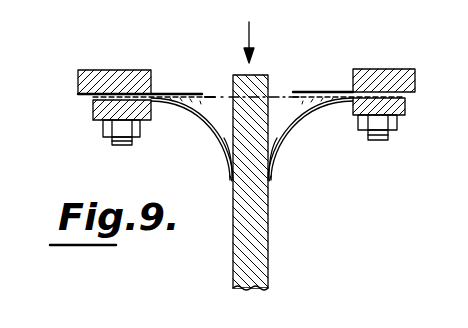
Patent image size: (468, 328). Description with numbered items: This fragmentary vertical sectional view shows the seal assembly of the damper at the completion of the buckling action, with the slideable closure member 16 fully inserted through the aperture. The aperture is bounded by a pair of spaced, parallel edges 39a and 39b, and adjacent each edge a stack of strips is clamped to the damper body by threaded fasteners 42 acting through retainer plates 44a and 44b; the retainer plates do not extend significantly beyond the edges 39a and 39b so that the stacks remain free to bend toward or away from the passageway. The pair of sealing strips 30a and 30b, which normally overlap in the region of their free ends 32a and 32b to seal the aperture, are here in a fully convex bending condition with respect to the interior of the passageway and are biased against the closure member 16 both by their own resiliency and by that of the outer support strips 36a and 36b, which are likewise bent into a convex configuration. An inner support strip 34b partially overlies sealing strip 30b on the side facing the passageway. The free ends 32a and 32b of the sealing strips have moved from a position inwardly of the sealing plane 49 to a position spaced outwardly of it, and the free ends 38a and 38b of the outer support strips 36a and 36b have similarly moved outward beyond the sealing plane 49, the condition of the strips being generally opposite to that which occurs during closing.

The closure member 16 is at (260, 264).
The sealing strip 30a is at (222, 165).
The sealing strip 30b is at (278, 142).
The free end of sealing strip 32a is at (228, 203).
The free end of sealing strip 32b is at (270, 183).
The inner support strip 34b is at (320, 90).
The outer support strip 36a is at (167, 103).
The outer support strip 36b is at (300, 110).
The free end of outer support strip 38a is at (197, 117).
The free end of outer support strip 38b is at (286, 122).
The aperture edge 39a is at (157, 82).
The aperture edge 39b is at (348, 69).
The threaded fastener 42 is at (103, 133).
The retainer plate 44a is at (97, 108).
The retainer plate 44b is at (405, 117).
The sealing plane 49 is at (222, 95).